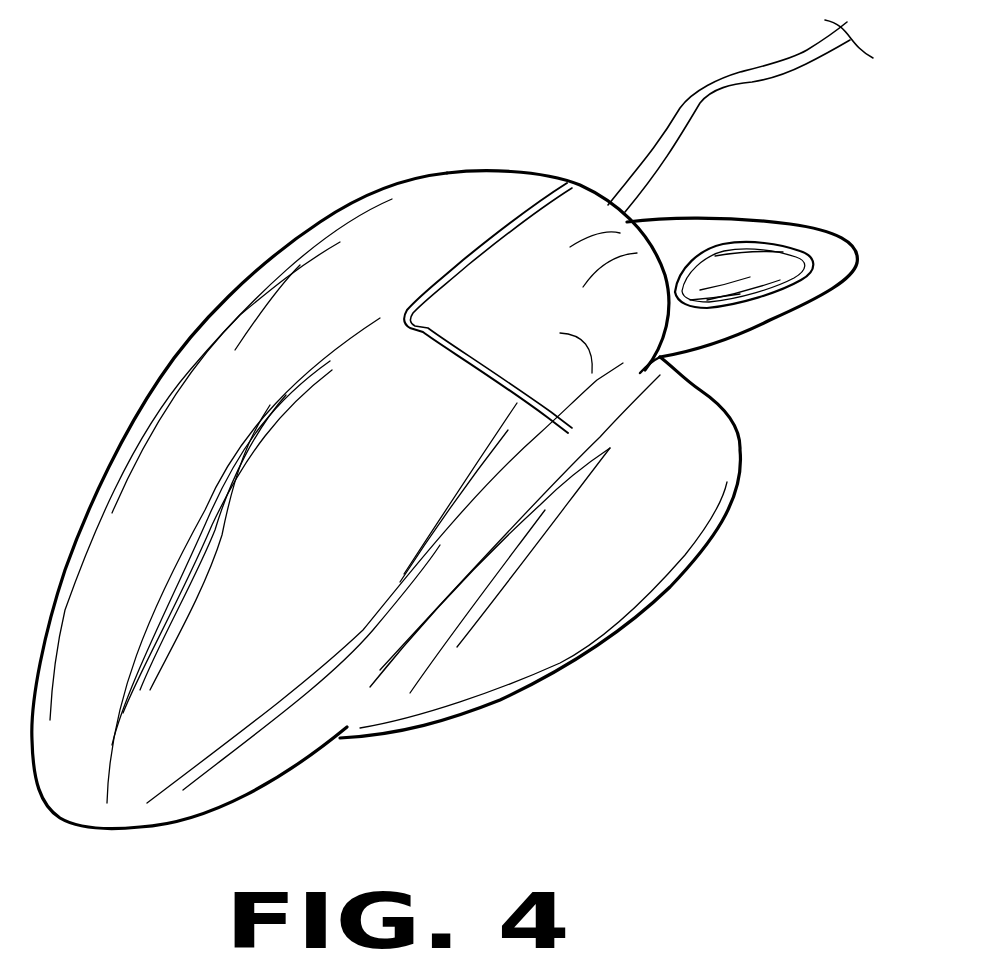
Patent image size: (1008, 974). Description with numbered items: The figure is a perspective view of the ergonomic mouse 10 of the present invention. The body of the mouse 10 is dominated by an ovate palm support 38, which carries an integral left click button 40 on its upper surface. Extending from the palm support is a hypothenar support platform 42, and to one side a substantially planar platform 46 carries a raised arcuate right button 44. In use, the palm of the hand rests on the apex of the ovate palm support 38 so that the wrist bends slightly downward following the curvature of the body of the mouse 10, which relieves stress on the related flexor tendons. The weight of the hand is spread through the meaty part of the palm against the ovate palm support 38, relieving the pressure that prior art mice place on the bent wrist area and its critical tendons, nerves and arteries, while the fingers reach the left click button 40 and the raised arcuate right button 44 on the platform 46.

The ergonomic mouse 10 is at (353, 162).
The ovate palm support 38 is at (262, 372).
The left click button 40 is at (547, 223).
The hypothenar support platform 42 is at (563, 675).
The raised arcuate right button 44 is at (740, 263).
The substantially planar platform 46 is at (795, 300).